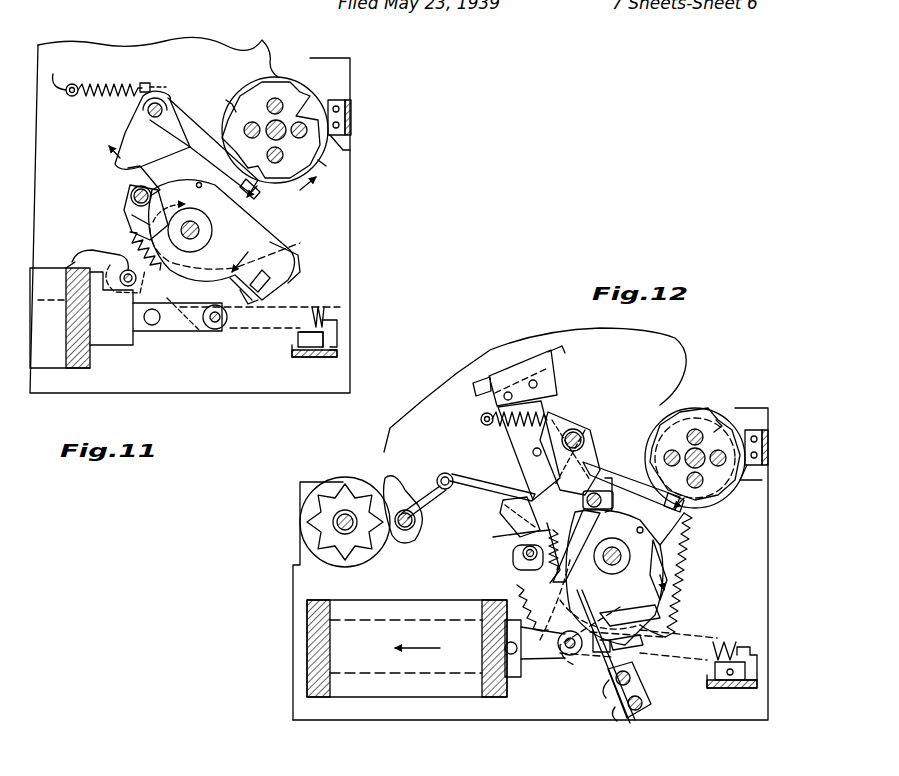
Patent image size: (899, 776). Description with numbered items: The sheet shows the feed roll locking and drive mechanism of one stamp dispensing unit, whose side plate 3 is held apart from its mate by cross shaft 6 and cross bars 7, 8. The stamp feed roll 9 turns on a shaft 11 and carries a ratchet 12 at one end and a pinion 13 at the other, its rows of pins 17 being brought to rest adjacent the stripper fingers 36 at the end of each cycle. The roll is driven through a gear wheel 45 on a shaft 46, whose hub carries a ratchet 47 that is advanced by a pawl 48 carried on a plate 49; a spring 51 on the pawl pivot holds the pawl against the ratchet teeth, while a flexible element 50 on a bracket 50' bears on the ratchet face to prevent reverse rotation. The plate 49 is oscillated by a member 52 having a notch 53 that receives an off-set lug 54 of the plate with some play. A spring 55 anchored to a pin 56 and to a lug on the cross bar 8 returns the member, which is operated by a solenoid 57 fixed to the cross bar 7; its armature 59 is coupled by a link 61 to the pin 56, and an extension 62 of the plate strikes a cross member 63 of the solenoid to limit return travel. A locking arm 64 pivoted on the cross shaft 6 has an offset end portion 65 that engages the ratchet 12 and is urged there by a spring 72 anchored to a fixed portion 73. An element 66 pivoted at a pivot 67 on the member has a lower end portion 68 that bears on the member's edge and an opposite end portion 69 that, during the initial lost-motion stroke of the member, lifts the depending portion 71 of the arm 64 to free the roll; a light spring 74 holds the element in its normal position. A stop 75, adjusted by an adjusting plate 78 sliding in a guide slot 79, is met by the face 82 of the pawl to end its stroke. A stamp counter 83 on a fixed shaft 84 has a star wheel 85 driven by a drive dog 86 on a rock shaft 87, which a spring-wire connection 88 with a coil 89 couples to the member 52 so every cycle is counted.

In FIG. 11, the side plate 3 is at (345, 223).
In FIG. 12, the side plate 3 is at (481, 358).
In FIG. 11, the cross shaft 6 is at (161, 104).
In FIG. 12, the cross shaft 6 is at (580, 434).
In FIG. 12, the cross bar 7 is at (318, 651).
In FIG. 11, the cross bar 8 is at (332, 360).
In FIG. 12, the cross bar 8 is at (758, 683).
In FIG. 11, the stamp feed roll 9 is at (282, 74).
In FIG. 12, the stamp feed roll 9 is at (668, 407).
In FIG. 11, the shaft 11 is at (282, 126).
In FIG. 12, the shaft 11 is at (700, 453).
In FIG. 11, the ratchet 12 is at (300, 95).
In FIG. 12, the ratchet 12 is at (688, 418).
In FIG. 12, the pinion 13 is at (736, 500).
In FIG. 11, the pins 17 is at (228, 102).
In FIG. 12, the pins 17 is at (720, 418).
In FIG. 11, the stripper fingers 36 is at (345, 151).
In FIG. 12, the stripper fingers 36 is at (763, 473).
In FIG. 12, the gear wheel 45 is at (700, 572).
In FIG. 11, the shaft 46 is at (194, 235).
In FIG. 12, the shaft 46 is at (612, 566).
In FIG. 12, the ratchet 47 is at (656, 557).
In FIG. 11, the pawl 48 is at (86, 253).
In FIG. 12, the pawl 48 is at (527, 534).
In FIG. 11, the plate 49 is at (245, 236).
In FIG. 12, the plate 49 is at (520, 583).
In FIG. 12, the flexible element 50 is at (586, 656).
In FIG. 12, the bracket 50' is at (632, 710).
In FIG. 11, the spring 51 is at (124, 262).
In FIG. 12, the spring 51 is at (515, 551).
In FIG. 11, the member 52 is at (285, 253).
In FIG. 12, the member 52 is at (655, 613).
In FIG. 11, the notch 53 is at (252, 298).
In FIG. 12, the notch 53 is at (603, 662).
In FIG. 11, the off-set lug 54 is at (266, 283).
In FIG. 12, the off-set lug 54 is at (642, 660).
In FIG. 11, the spring 55 is at (320, 307).
In FIG. 12, the spring 55 is at (735, 650).
In FIG. 11, the pin 56 is at (213, 340).
In FIG. 12, the pin 56 is at (566, 657).
In FIG. 11, the solenoid 57 is at (48, 366).
In FIG. 12, the solenoid 57 is at (420, 698).
In FIG. 11, the armature 59 is at (121, 345).
In FIG. 11, the link 61 is at (175, 336).
In FIG. 12, the link 61 is at (530, 680).
In FIG. 11, the extension 62 is at (74, 276).
In FIG. 12, the extension 62 is at (502, 499).
In FIG. 11, the cross member 63 is at (66, 300).
In FIG. 12, the cross member 63 is at (495, 698).
In FIG. 11, the arm 64 is at (188, 143).
In FIG. 12, the arm 64 is at (594, 460).
In FIG. 11, the offset end portion 65 is at (262, 188).
In FIG. 12, the offset end portion 65 is at (690, 512).
In FIG. 11, the element 66 is at (126, 208).
In FIG. 12, the element 66 is at (602, 470).
In FIG. 11, the pivot 67 is at (131, 195).
In FIG. 12, the pivot 67 is at (593, 510).
In FIG. 11, the lower end portion 68 is at (130, 221).
In FIG. 11, the end portion 69 is at (132, 168).
In FIG. 12, the end portion 69 is at (606, 486).
In FIG. 11, the depending portion 71 is at (126, 140).
In FIG. 12, the depending portion 71 is at (540, 463).
In FIG. 11, the spring 72 is at (92, 88).
In FIG. 12, the spring 72 is at (497, 426).
In FIG. 11, the fixed portion 73 is at (60, 77).
In FIG. 12, the fixed portion 73 is at (481, 418).
In FIG. 11, the spring 74 is at (160, 260).
In FIG. 12, the stop 75 is at (531, 482).
In FIG. 12, the adjusting plate 78 is at (513, 372).
In FIG. 12, the guide slot 79 is at (565, 350).
In FIG. 11, the face 82 is at (127, 234).
In FIG. 12, the stamp counter 83 is at (318, 553).
In FIG. 12, the shaft 84 is at (338, 522).
In FIG. 12, the star wheel 85 is at (320, 503).
In FIG. 12, the drive dog 86 is at (388, 477).
In FIG. 12, the rock shaft 87 is at (406, 531).
In FIG. 12, the connection 88 is at (444, 474).
In FIG. 12, the coil 89 is at (444, 491).